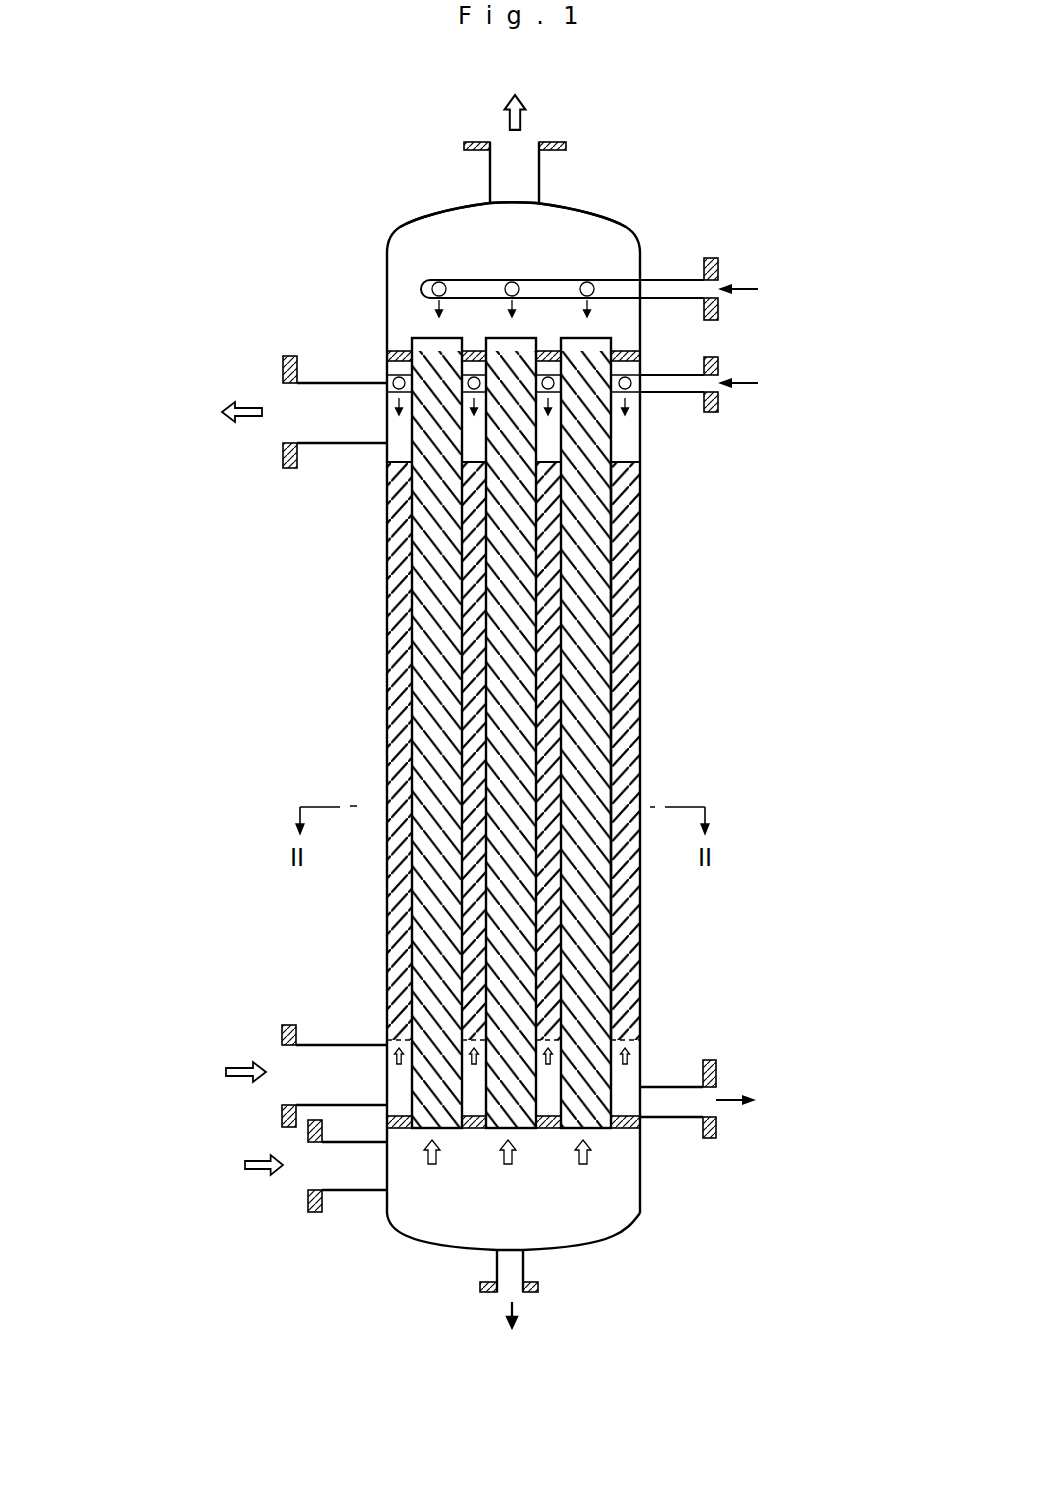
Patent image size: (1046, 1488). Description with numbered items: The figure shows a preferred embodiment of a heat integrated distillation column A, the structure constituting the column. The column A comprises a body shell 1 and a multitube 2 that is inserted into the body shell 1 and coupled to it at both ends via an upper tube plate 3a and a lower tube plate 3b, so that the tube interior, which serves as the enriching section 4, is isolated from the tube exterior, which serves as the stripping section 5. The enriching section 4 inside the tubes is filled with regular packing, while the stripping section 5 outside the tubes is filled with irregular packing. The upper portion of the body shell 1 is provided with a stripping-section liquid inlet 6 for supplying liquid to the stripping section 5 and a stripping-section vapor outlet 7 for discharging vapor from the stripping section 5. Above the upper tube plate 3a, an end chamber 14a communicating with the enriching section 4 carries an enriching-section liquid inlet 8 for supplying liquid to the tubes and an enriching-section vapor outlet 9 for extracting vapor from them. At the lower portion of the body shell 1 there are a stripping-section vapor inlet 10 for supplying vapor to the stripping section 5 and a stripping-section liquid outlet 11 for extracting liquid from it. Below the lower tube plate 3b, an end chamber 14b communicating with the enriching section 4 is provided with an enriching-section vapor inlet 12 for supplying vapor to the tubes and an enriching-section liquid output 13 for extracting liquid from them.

The body shell 1 is at (388, 723).
The multitube 2 is at (612, 582).
The upper tube plate 3a is at (405, 350).
The lower tube plate 3b is at (397, 1130).
The tube interior (enriching section) 4 is at (420, 572).
The tube exterior (stripping section) 5 is at (404, 640).
The stripping-section liquid inlet 6 is at (720, 396).
The stripping-section vapor outlet 7 is at (280, 434).
The enriching-section liquid inlet 8 is at (720, 300).
The enriching-section vapor outlet 9 is at (498, 141).
The stripping-section vapor inlet 10 is at (282, 1042).
The stripping-section liquid outlet 11 is at (716, 1086).
The enriching-section vapor inlet 12 is at (310, 1180).
The enriching-section liquid output 13 is at (505, 1293).
The end chamber 14a is at (565, 207).
The end chamber 14b is at (578, 1249).
The heat integrated distillation column A is at (268, 541).